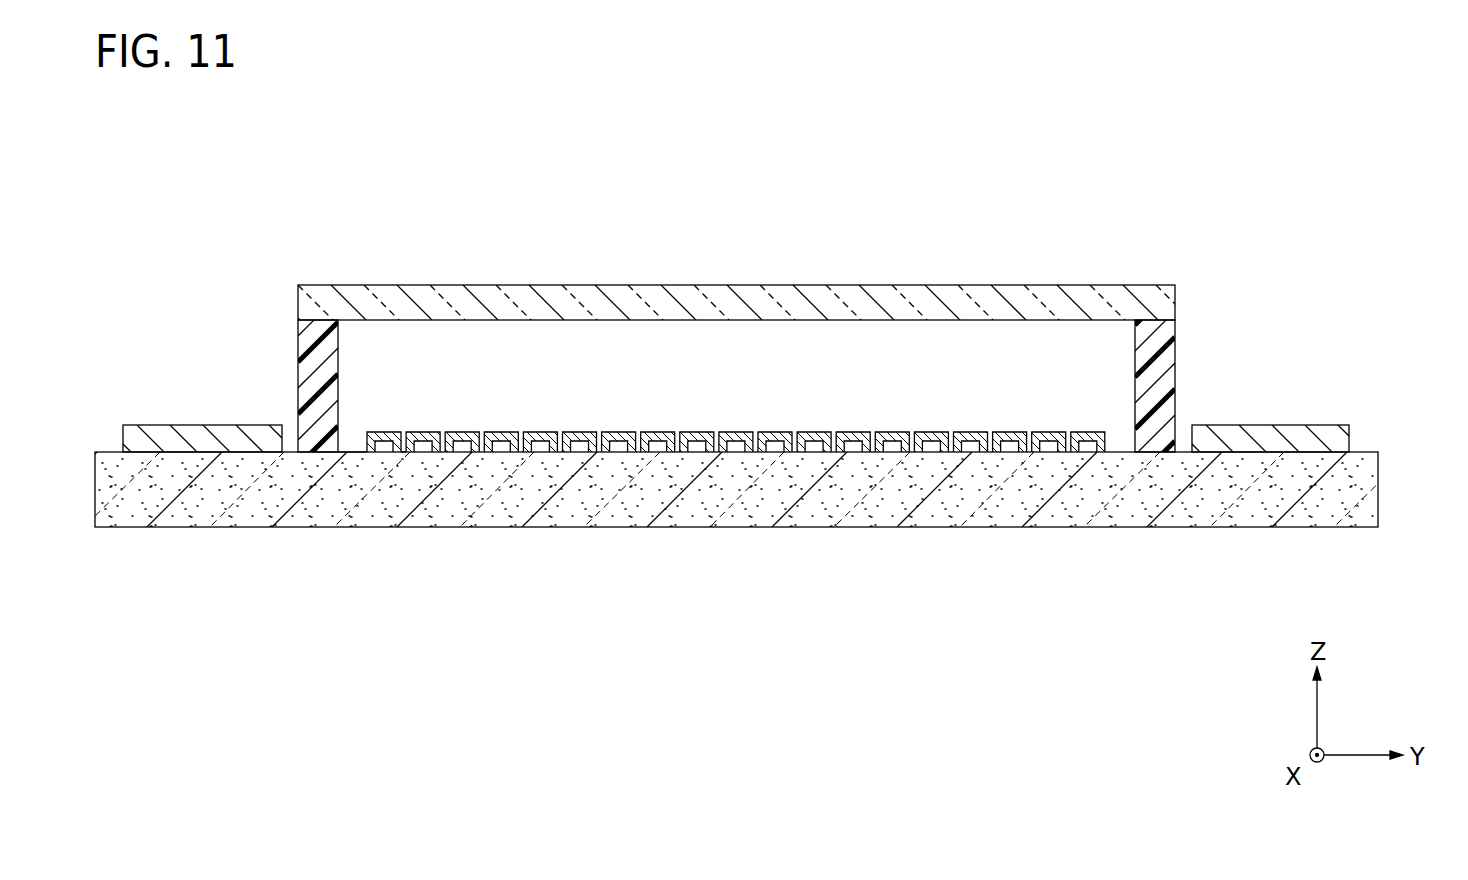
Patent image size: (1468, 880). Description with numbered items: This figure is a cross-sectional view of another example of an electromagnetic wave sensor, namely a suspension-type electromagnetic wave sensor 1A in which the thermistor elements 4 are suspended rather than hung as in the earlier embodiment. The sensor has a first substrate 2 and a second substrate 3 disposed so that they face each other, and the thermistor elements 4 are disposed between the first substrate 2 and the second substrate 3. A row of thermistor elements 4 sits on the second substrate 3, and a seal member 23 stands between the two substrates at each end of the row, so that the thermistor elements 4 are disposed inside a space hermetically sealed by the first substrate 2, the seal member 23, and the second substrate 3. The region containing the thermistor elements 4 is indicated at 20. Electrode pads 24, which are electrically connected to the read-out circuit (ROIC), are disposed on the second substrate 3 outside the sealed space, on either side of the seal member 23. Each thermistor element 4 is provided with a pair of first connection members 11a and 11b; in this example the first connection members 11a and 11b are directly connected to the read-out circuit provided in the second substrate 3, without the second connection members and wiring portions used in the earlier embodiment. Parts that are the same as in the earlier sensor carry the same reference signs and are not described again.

The electromagnetic wave sensor 1A is at (342, 155).
The first substrate 2 is at (1160, 300).
The second substrate 3 is at (1352, 488).
The thermistor element 4 is at (385, 430).
The first connection member 11a is at (362, 450).
The first connection member 11b is at (413, 452).
The sensor element array 20 is at (417, 405).
The seal member 23 is at (313, 372).
The electrode pad 24 is at (187, 433).